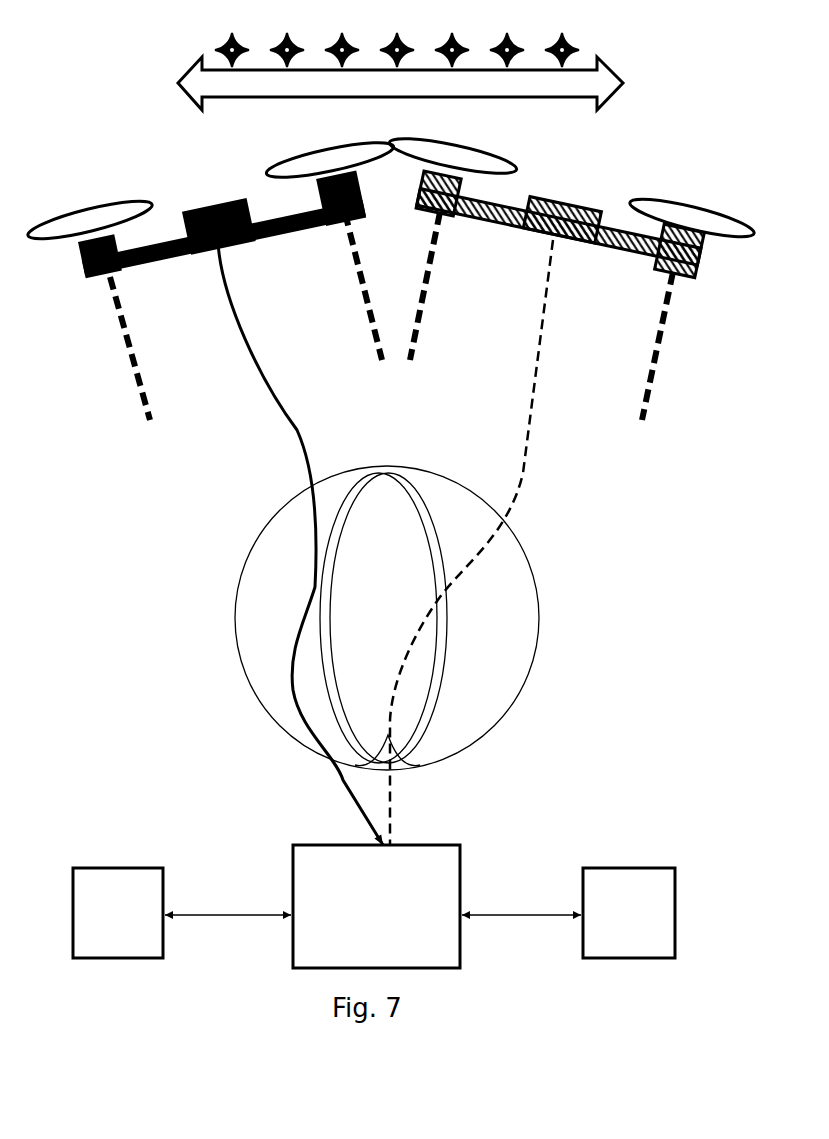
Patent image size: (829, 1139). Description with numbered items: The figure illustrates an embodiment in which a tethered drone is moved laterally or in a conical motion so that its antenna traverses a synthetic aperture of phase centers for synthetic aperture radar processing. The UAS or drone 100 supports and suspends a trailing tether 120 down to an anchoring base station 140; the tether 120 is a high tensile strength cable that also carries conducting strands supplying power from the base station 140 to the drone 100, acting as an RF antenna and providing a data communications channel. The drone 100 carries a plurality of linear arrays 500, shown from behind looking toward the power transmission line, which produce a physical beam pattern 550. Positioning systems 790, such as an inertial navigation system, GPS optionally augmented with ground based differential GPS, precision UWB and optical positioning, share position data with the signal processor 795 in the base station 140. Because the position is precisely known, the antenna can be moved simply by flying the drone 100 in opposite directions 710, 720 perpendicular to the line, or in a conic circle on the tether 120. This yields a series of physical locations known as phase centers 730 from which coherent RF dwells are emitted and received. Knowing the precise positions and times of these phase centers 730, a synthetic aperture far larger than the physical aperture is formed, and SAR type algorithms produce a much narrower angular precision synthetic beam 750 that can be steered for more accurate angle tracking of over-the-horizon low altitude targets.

The drone 100 is at (391, 205).
The tether 120 is at (385, 542).
The base station 140 is at (390, 921).
The linear arrays 500 is at (140, 319).
The physical beam pattern 550 is at (563, 687).
The first direction 710 is at (264, 83).
The second direction 720 is at (537, 83).
The phase centers 730 is at (397, 34).
The synthetic beam 750 is at (443, 595).
The positioning systems 790 is at (138, 930).
The signal processor 795 is at (373, 931).